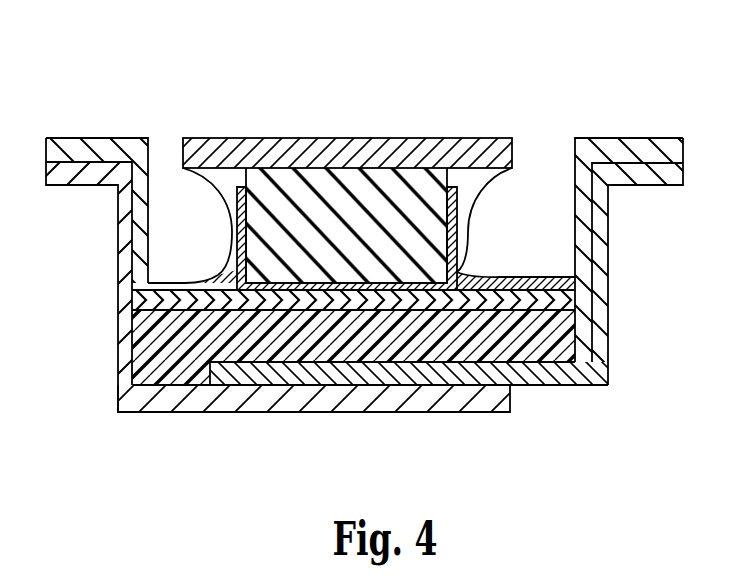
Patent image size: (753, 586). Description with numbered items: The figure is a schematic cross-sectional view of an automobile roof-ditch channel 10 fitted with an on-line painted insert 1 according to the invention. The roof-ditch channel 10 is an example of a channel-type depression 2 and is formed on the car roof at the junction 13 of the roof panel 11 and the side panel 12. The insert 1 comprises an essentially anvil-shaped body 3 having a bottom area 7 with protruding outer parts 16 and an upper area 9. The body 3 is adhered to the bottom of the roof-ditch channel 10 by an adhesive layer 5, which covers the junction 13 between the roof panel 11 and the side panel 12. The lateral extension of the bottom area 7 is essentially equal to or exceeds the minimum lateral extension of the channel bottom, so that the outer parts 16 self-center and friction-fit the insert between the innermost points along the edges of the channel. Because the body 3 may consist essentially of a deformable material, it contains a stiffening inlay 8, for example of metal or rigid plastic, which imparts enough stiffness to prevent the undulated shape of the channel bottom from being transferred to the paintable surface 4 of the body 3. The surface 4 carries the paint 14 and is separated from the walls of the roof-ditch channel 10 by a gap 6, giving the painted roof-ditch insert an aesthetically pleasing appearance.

The on-line paintable insert 1 is at (341, 100).
The depression 2 is at (175, 130).
The anvil-shaped body 3 is at (384, 158).
The paintable surface 4 is at (252, 168).
The adhesive layer 5 is at (366, 322).
The gap 6 is at (162, 190).
The bottom area 7 is at (268, 300).
The stiffening inlay 8 is at (320, 290).
The upper area 9 is at (225, 190).
The roof-ditch channel 10 is at (443, 413).
The roof panel 11 is at (143, 396).
The side panel 12 is at (542, 377).
The junction 13 is at (202, 386).
The paint 14 is at (577, 138).
The outer parts 16 is at (165, 301).